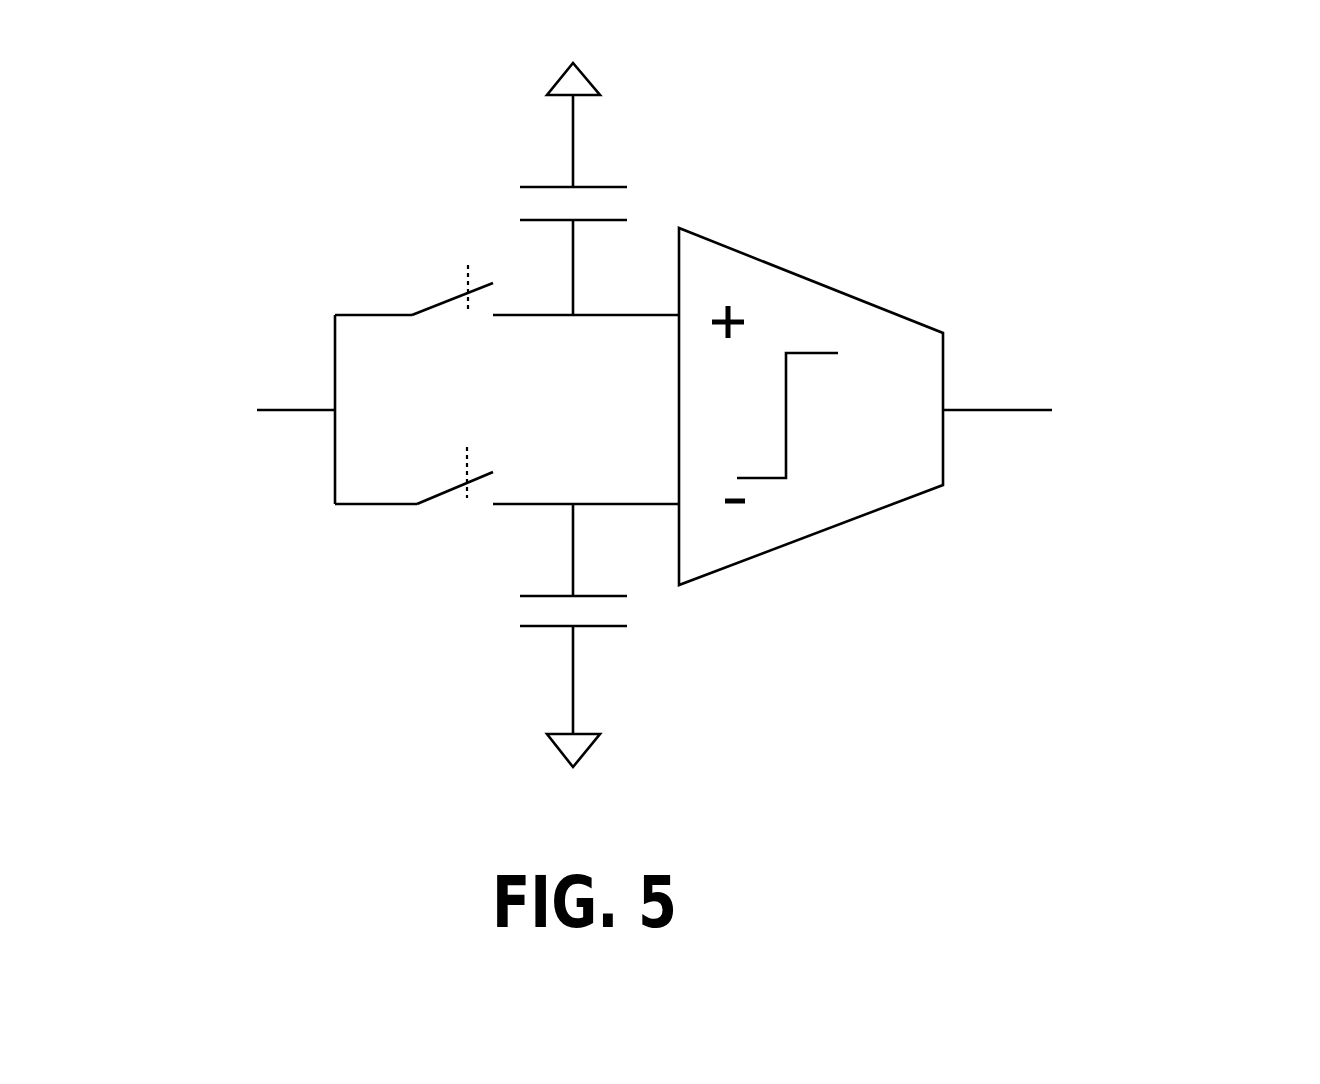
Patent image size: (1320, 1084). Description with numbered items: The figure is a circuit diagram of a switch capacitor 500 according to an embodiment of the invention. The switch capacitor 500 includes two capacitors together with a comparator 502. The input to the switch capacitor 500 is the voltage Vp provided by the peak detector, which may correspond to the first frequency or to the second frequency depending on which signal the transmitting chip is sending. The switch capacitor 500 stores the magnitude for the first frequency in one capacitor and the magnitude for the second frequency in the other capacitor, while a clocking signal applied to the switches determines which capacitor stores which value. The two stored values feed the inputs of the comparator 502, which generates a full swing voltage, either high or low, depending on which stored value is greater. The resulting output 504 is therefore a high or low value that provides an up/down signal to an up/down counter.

The switch capacitor 500 is at (701, 425).
The comparator 502 is at (783, 267).
The output 504 is at (1087, 365).